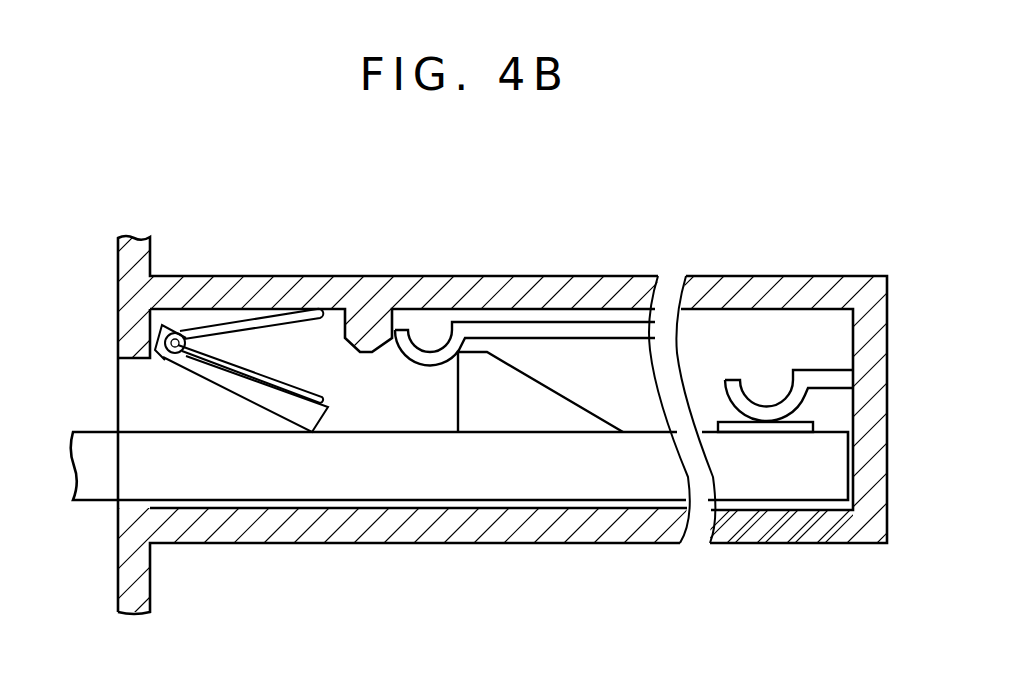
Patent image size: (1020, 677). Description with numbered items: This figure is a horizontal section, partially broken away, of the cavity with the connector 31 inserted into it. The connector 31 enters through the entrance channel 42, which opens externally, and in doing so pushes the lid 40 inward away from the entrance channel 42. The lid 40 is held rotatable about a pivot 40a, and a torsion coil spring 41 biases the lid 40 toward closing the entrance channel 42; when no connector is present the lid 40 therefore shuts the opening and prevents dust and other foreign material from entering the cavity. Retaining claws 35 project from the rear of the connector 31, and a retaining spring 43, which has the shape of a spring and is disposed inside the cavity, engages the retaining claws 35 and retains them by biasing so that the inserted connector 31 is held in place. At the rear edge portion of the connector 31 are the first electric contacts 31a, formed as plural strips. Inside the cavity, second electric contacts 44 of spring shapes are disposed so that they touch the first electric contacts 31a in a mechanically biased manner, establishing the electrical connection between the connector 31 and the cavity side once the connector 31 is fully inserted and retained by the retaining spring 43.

The connector 31 is at (525, 485).
The first electric contacts 31a is at (770, 430).
The retaining claws 35 is at (537, 400).
The lid 40 is at (300, 408).
The pivot 40a is at (177, 335).
The torsion coil spring 41 is at (243, 323).
The entrance channel 42 is at (131, 360).
The retaining spring 43 is at (545, 325).
The second electric contacts 44 is at (732, 388).